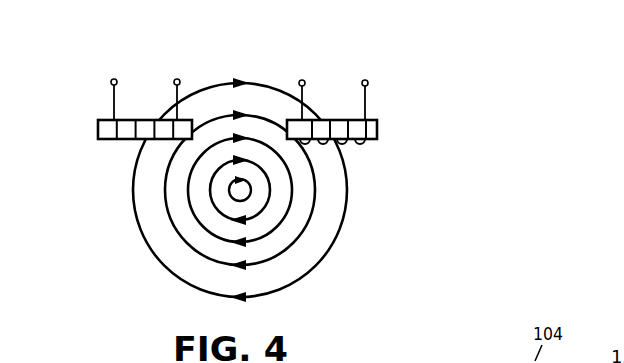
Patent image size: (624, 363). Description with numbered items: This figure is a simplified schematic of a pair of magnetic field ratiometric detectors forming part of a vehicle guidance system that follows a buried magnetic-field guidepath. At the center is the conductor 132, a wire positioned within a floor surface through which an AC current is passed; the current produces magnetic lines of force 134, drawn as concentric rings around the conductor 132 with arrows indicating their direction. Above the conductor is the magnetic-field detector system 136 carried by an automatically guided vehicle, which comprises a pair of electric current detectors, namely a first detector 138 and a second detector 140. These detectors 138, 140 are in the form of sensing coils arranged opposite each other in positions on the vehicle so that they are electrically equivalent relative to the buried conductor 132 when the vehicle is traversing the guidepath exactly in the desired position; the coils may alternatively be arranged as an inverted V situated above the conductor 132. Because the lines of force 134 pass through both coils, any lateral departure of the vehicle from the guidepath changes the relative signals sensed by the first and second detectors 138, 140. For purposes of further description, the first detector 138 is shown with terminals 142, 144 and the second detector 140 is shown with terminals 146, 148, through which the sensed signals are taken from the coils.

The conductor 132 is at (232, 197).
The lines of force 134 is at (256, 116).
The magnetic-field detector system 136 is at (375, 183).
The first detector 138 is at (101, 140).
The second detector 140 is at (378, 127).
The terminal 142 is at (111, 84).
The terminal 144 is at (179, 80).
The terminal 146 is at (367, 81).
The terminal 148 is at (304, 81).